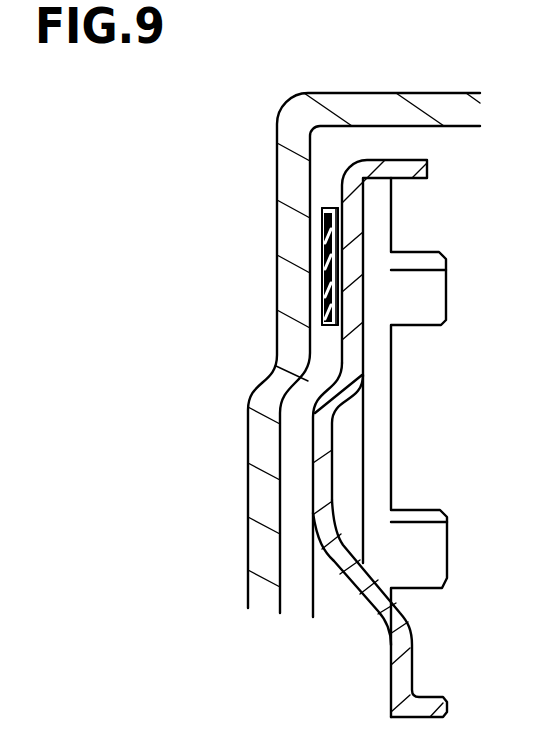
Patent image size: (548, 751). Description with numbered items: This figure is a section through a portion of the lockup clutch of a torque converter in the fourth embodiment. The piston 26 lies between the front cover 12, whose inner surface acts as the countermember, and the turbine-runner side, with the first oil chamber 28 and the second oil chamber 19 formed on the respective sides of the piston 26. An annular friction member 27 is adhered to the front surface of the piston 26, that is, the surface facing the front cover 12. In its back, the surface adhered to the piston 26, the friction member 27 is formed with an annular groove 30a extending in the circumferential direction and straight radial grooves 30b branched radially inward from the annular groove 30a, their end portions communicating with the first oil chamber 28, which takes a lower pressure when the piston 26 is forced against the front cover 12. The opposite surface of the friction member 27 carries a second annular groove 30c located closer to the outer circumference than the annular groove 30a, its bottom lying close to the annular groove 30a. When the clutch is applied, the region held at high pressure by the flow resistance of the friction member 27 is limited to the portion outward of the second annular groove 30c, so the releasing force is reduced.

The front cover 12 is at (435, 100).
The second oil chamber 19 is at (418, 143).
The piston 26 is at (412, 640).
The friction member 27 is at (322, 290).
The first oil chamber 28 is at (292, 502).
The annular groove 30a is at (336, 230).
The radial grooves 30b is at (336, 313).
The second annular groove 30c is at (322, 212).